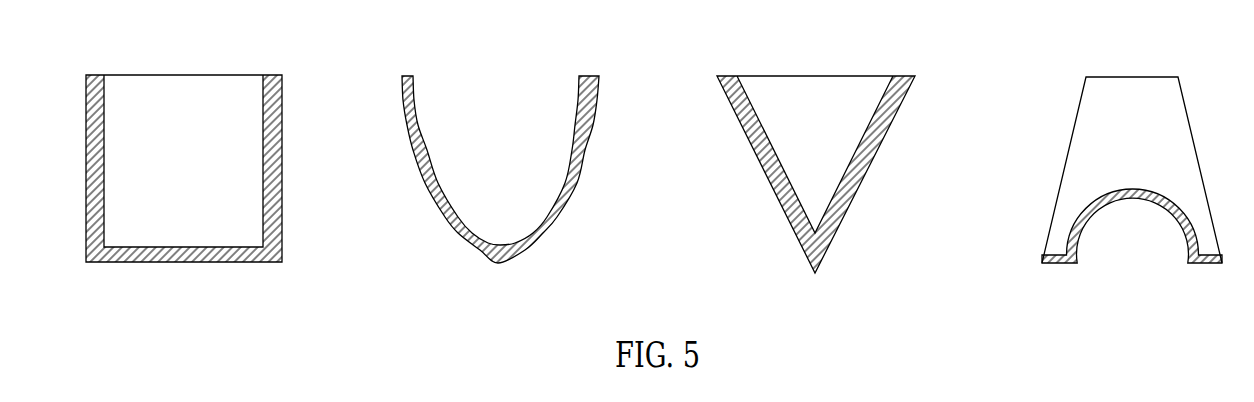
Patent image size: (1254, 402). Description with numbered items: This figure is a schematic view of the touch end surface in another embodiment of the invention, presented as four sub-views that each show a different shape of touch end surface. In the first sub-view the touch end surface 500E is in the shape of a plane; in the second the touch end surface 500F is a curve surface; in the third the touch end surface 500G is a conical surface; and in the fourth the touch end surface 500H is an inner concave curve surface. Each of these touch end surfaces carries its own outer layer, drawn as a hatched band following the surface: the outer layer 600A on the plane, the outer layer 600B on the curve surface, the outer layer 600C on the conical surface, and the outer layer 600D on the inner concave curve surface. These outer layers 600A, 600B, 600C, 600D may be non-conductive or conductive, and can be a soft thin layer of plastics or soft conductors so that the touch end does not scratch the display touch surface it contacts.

The touch end surface 500E is at (98, 25).
The touch end surface 500F is at (413, 25).
The touch end surface 500G is at (728, 25).
The touch end surface 500H is at (1045, 26).
The outer layer 600A is at (279, 198).
The outer layer 600B is at (572, 193).
The outer layer 600C is at (857, 188).
The outer layer 600D is at (1093, 207).